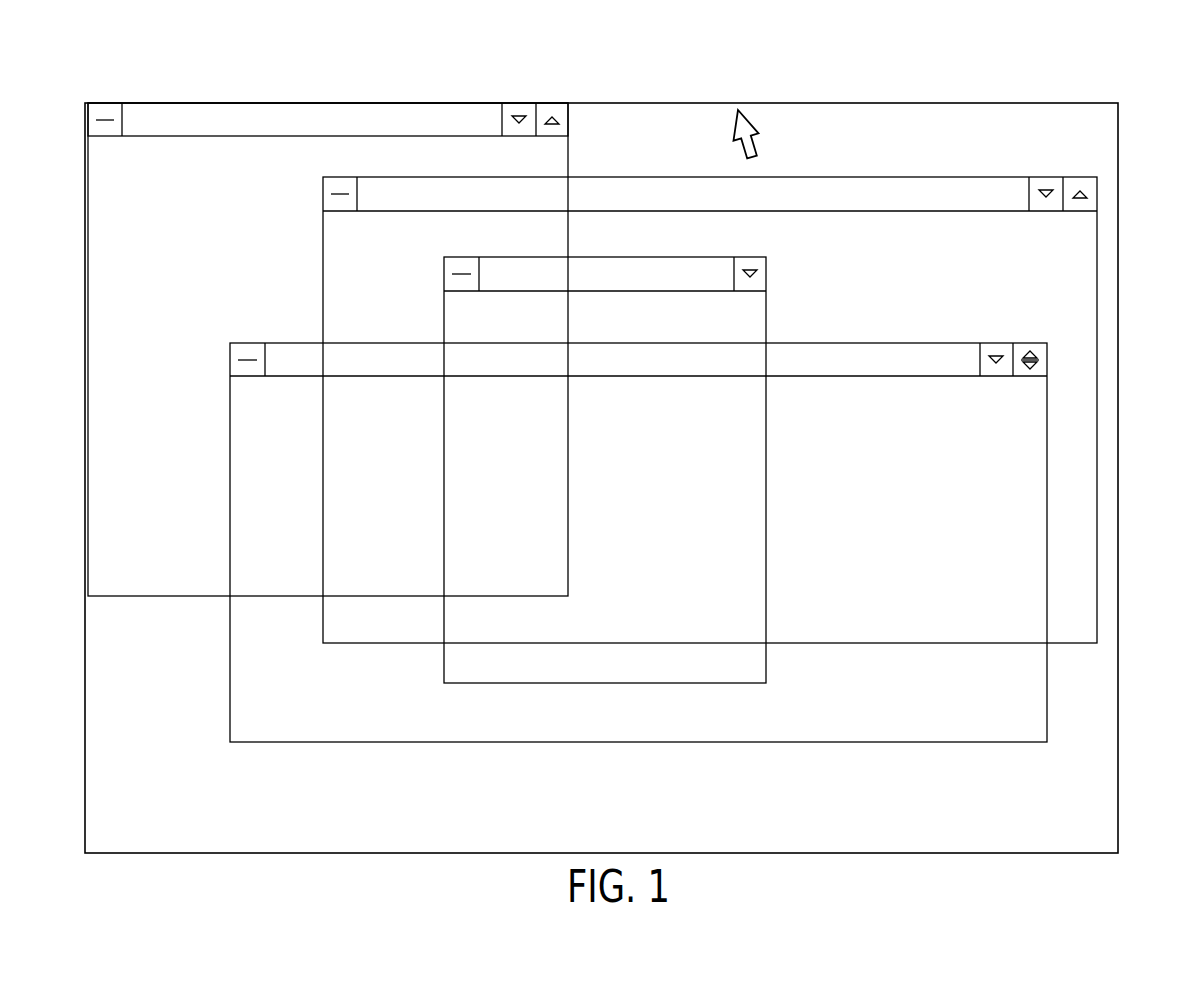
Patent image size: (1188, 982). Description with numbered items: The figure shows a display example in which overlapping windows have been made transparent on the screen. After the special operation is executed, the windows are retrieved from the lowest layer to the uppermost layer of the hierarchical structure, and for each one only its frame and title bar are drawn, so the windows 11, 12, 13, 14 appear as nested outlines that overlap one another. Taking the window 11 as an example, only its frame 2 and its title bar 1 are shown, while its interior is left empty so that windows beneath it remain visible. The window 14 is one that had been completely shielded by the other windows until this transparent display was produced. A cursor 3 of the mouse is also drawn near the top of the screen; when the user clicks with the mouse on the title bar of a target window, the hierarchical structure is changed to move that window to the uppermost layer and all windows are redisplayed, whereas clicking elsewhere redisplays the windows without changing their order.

The title bar 1 is at (178, 120).
The frame 2 is at (359, 310).
The cursor 3 is at (758, 135).
The window 11 is at (444, 102).
The window 12 is at (1082, 278).
The window 13 is at (1014, 732).
The window 14 is at (747, 321).